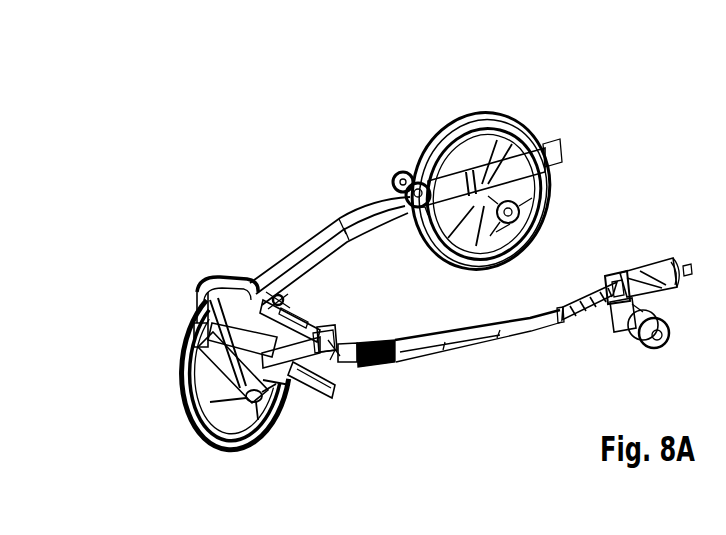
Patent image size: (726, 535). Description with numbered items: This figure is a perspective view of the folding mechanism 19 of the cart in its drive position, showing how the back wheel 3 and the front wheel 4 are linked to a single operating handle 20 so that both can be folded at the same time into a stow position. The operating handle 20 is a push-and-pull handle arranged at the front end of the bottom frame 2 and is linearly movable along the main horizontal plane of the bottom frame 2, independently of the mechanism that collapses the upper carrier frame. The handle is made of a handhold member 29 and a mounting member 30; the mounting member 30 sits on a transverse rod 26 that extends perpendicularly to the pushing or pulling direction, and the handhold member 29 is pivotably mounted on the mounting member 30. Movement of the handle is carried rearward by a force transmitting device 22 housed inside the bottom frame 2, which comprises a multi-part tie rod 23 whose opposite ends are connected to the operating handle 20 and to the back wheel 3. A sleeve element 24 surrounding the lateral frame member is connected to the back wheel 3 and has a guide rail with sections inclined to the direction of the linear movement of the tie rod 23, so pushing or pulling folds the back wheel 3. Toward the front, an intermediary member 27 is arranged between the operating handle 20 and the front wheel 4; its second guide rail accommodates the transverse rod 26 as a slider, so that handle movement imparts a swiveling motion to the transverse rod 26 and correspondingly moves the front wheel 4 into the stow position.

The bottom frame 2 is at (335, 207).
The back wheel 3 is at (489, 97).
The front wheel 4 is at (172, 388).
The folding mechanism 19 is at (476, 363).
The operating handle 20 is at (258, 330).
The force transmitting device 22 is at (418, 368).
The tie rod 23 is at (531, 330).
The sleeve element 24 is at (503, 182).
The transverse rod 26 is at (340, 350).
The intermediary member 27 is at (308, 316).
The handhold member 29 is at (284, 364).
The mounting member 30 is at (280, 296).